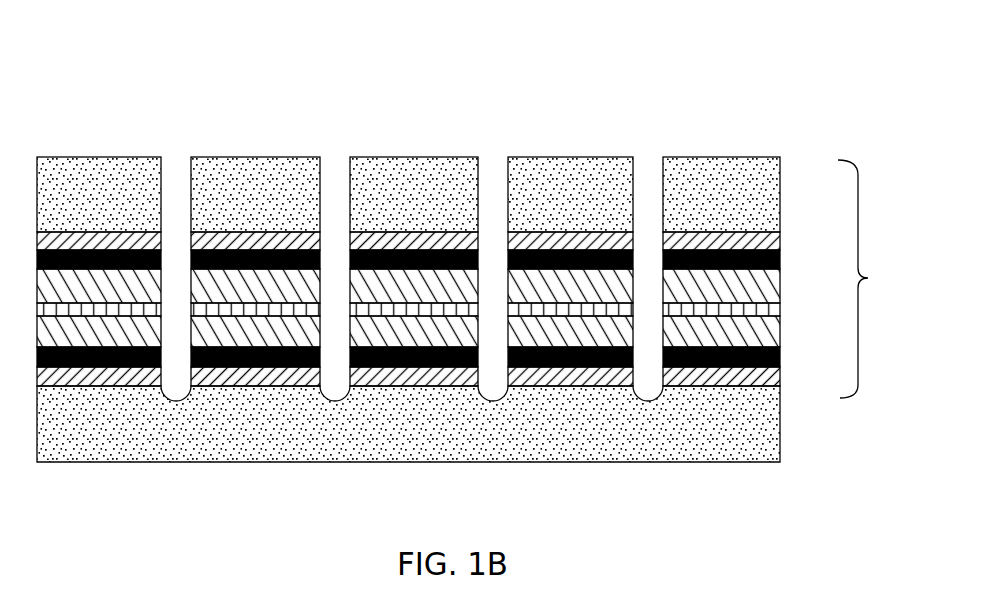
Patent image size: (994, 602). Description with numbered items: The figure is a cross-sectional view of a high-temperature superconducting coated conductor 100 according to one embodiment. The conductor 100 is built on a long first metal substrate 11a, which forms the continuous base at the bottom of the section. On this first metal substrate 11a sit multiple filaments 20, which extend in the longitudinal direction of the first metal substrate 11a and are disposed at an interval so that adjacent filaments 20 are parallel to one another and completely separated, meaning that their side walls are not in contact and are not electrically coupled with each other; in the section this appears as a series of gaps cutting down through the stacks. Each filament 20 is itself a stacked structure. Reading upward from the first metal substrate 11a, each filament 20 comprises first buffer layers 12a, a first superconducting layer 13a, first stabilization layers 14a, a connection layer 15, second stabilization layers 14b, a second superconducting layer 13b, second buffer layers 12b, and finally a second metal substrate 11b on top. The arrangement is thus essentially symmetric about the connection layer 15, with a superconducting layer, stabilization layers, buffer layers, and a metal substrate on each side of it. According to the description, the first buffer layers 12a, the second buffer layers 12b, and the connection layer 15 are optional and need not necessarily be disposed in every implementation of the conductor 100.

The high-temperature superconducting coated conductor 100 is at (842, 50).
The first metal substrate 11a is at (764, 418).
The second metal substrate 11b is at (764, 198).
The first buffer layers 12a is at (768, 377).
The second buffer layers 12b is at (770, 241).
The first superconducting layer 13a is at (770, 356).
The second superconducting layer 13b is at (770, 260).
The first stabilization layers 14a is at (766, 328).
The second stabilization layers 14b is at (766, 280).
The connection layer 15 is at (770, 309).
The filaments 20 is at (873, 279).